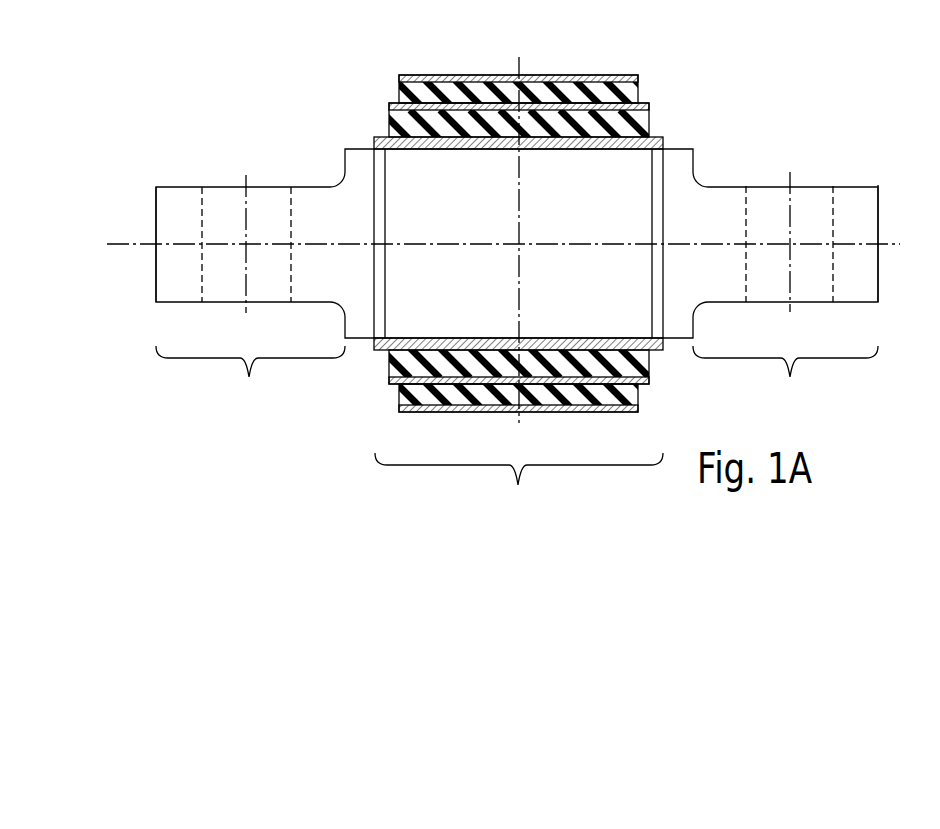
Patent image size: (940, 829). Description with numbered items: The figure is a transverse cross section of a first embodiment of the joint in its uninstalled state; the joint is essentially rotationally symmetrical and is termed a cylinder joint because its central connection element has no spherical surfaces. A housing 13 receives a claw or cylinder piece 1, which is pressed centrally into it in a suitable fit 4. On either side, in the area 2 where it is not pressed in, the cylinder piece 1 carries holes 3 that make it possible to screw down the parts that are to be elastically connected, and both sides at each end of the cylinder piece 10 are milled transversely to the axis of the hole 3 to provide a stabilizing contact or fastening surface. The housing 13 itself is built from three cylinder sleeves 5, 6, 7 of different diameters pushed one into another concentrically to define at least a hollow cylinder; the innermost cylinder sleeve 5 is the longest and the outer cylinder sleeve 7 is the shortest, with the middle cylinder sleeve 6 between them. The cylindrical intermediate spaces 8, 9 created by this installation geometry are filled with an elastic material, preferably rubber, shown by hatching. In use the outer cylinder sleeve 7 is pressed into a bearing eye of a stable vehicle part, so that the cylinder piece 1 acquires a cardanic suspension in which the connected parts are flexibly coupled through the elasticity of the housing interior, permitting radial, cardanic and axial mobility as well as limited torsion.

The claw / cylinder piece 1 is at (345, 150).
The area not pressed in 2 is at (156, 265).
The holes 3 is at (228, 199).
The fit 4 is at (620, 298).
The innermost cylinder sleeve 5 is at (663, 138).
The middle cylinder sleeve 6 is at (650, 105).
The outer cylinder sleeve 7 is at (632, 80).
The cylindrical intermediate space 8 is at (460, 78).
The cylindrical intermediate space 9 is at (570, 77).
The cylinder piece end 10 is at (517, 379).
The housing 13 is at (519, 488).